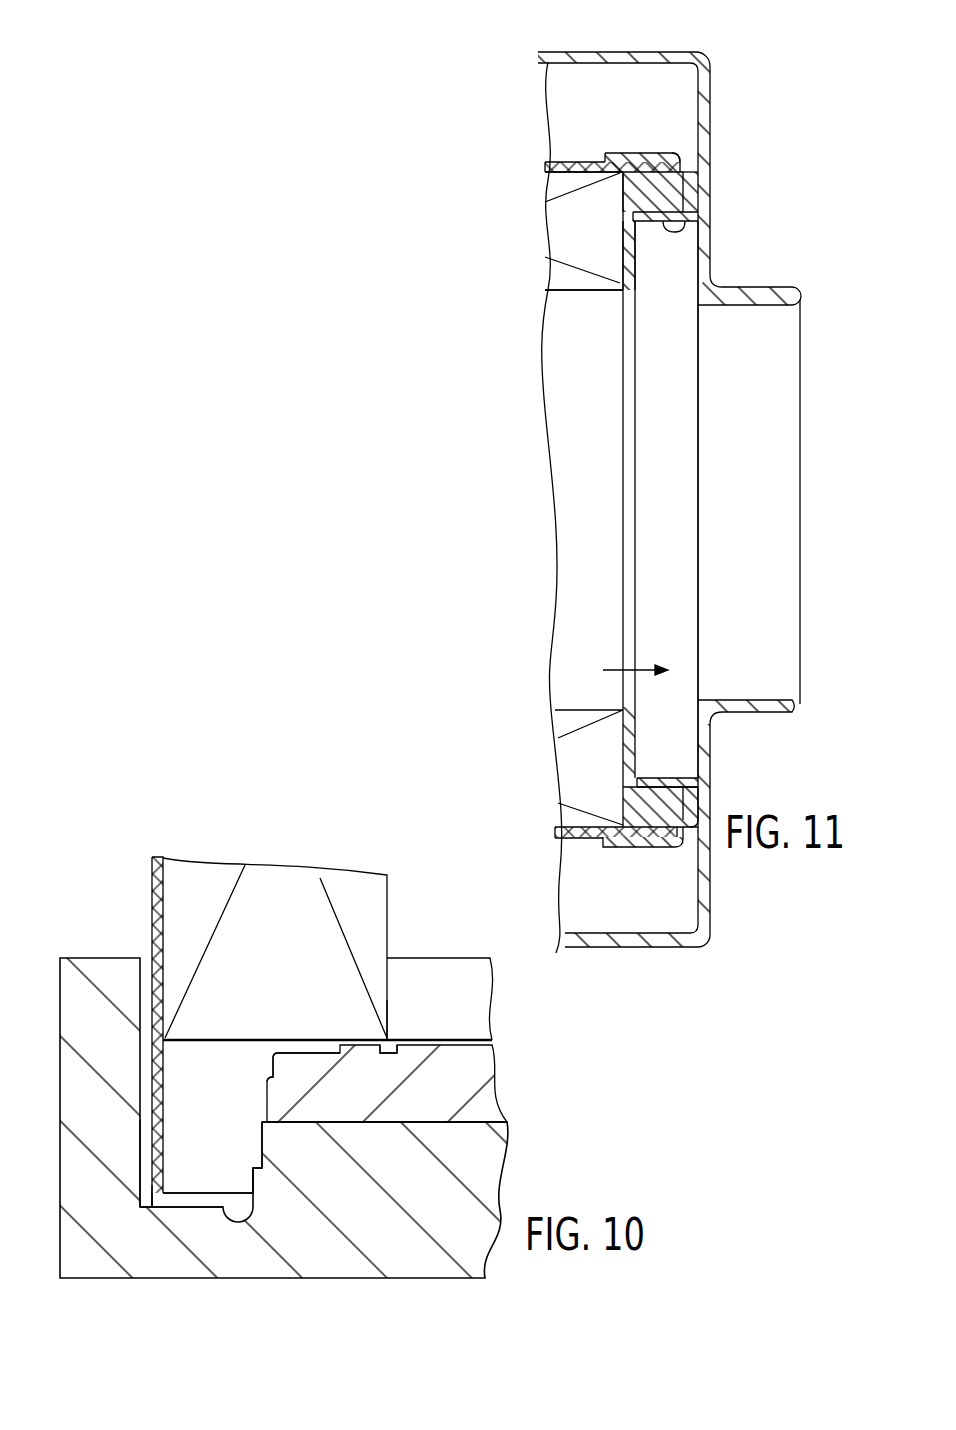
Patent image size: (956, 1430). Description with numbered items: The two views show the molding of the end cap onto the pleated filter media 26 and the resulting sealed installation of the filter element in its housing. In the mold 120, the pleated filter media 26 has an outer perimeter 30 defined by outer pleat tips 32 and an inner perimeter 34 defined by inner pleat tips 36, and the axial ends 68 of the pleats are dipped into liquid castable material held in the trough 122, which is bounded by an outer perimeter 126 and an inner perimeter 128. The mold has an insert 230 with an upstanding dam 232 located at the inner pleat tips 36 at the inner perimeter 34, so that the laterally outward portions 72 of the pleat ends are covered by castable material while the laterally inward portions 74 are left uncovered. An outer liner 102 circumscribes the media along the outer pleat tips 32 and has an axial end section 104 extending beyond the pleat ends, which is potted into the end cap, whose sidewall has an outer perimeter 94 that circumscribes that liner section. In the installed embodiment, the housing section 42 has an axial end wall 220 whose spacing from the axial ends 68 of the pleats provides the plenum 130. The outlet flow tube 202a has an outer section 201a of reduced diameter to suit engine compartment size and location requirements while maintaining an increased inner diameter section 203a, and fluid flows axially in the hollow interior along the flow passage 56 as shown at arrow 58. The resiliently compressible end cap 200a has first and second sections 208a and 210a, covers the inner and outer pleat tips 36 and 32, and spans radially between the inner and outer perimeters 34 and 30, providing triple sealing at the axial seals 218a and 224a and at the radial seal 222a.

In FIG. 11, the housing section 42 is at (576, 50).
In FIG. 11, the axial end wall of the housing 220 is at (710, 238).
In FIG. 11, the outer section of reduced diameter 201a is at (750, 287).
In FIG. 11, the outlet flow tube 202a is at (805, 292).
In FIG. 11, the pleated filter media 26 is at (560, 216).
In FIG. 10, the pleated filter media 26 is at (305, 882).
In FIG. 11, the outer perimeter 30 is at (548, 180).
In FIG. 11, the inner perimeter 34 is at (553, 276).
In FIG. 10, the inner perimeter 34 is at (390, 920).
In FIG. 11, the second section of the end cap 210a is at (610, 290).
In FIG. 11, the outer liner 102 is at (545, 165).
In FIG. 10, the outer liner 102 is at (160, 857).
In FIG. 11, the outer perimeter of the end cap sidewall 94 is at (658, 153).
In FIG. 11, the first section of the end cap 208a is at (680, 160).
In FIG. 11, the end cap 200a is at (678, 188).
In FIG. 11, the axial seal 218a is at (710, 197).
In FIG. 11, the increased inner diameter section 203a is at (710, 215).
In FIG. 11, the axial ends of pleats 68 is at (623, 255).
In FIG. 10, the axial ends of pleats 68 is at (232, 1040).
In FIG. 11, the flow passage 56 is at (603, 433).
In FIG. 11, the plenum 130 is at (662, 245).
In FIG. 11, the arrow 58 is at (652, 665).
In FIG. 11, the radial seal 222a is at (675, 780).
In FIG. 11, the axial seal 224a is at (637, 775).
In FIG. 10, the mold 120 is at (60, 1110).
In FIG. 10, the outer perimeter of trough 126 is at (130, 1163).
In FIG. 10, the inner perimeter of trough 128 is at (305, 1170).
In FIG. 10, the trough 122 is at (195, 1205).
In FIG. 10, the axial end section of outer liner 104 is at (150, 1205).
In FIG. 10, the outer pleat tips 32 is at (168, 1036).
In FIG. 10, the inner pleat tips 36 is at (388, 1040).
In FIG. 10, the insert 230 is at (470, 1083).
In FIG. 10, the upstanding dam 232 is at (417, 1040).
In FIG. 10, the laterally outward portions of the axial ends of the pleats 72 is at (208, 1045).
In FIG. 10, the laterally inward portions of the pleats 74 is at (345, 1053).